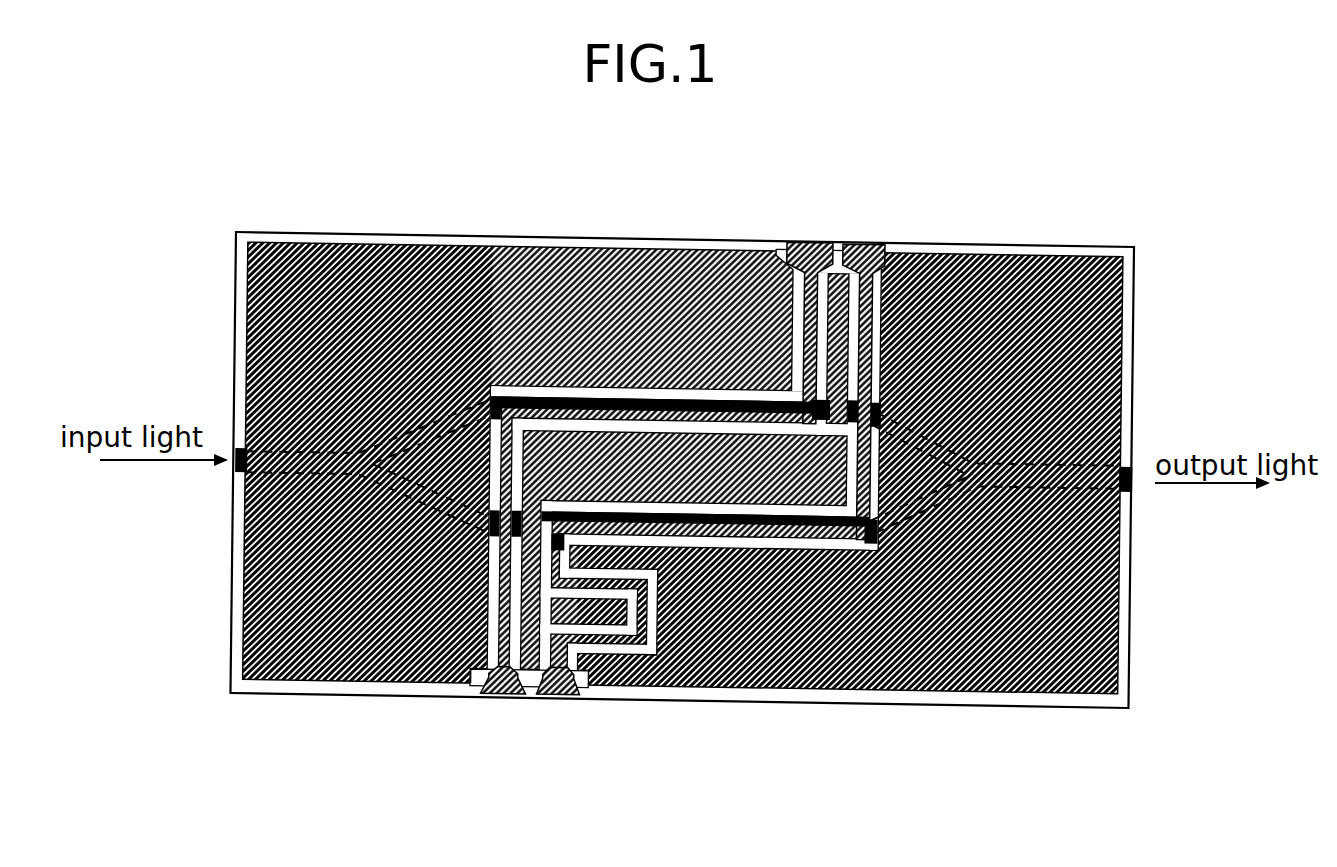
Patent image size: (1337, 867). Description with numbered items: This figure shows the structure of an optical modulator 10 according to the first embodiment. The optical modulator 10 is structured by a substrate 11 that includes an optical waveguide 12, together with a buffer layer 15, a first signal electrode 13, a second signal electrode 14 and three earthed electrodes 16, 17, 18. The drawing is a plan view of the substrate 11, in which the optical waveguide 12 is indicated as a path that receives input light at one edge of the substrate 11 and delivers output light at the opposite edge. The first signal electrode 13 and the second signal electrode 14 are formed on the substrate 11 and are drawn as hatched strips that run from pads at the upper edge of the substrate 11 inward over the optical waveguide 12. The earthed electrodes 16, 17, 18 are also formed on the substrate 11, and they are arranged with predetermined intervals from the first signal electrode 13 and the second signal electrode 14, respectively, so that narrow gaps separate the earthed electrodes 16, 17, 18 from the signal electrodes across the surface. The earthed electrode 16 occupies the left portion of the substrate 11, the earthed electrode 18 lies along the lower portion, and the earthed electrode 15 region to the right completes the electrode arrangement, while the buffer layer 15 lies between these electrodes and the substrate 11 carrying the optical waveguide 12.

The optical modulator 10 is at (1133, 248).
The substrate 11 is at (362, 232).
The optical waveguide 12 is at (238, 478).
The first signal electrode 13 is at (812, 243).
The second signal electrode 14 is at (872, 246).
The buffer layer 15 is at (1020, 707).
The earthed electrode 16 is at (318, 690).
The earthed electrode 17 is at (533, 697).
The earthed electrode 18 is at (806, 700).